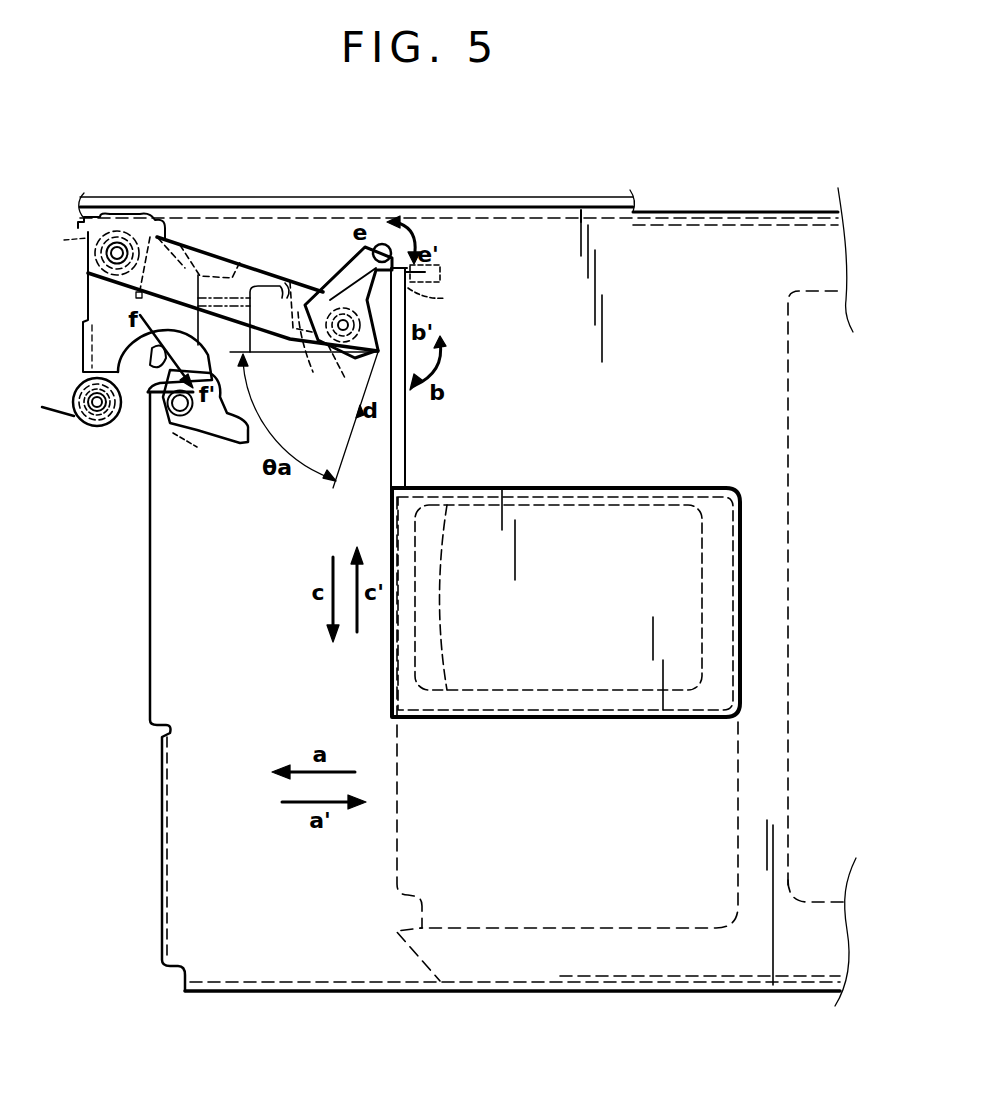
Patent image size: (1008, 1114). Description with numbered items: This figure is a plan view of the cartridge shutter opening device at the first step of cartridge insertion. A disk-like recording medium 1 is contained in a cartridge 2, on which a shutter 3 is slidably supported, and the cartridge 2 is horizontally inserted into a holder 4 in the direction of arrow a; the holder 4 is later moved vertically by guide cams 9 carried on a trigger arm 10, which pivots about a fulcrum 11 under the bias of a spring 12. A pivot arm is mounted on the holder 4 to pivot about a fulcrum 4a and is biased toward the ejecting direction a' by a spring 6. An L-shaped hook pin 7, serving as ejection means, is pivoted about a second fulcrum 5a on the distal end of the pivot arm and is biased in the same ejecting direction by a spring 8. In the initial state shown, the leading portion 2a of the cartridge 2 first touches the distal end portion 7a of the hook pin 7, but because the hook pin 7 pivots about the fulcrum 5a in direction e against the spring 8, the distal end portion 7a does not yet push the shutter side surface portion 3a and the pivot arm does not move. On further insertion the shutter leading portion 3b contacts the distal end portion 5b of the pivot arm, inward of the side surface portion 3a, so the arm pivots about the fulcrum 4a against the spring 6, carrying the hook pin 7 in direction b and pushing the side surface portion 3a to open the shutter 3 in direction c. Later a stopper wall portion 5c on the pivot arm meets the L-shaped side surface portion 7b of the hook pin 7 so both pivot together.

The disk-like recording medium 1 is at (480, 686).
The cartridge 2 is at (598, 905).
The leading portion of the cartridge 2a is at (425, 282).
The shutter 3 is at (633, 488).
The shutter side surface portion 3a is at (405, 275).
The shutter leading portion 3b is at (395, 453).
The holder 4 is at (208, 970).
The fulcrum 4a is at (117, 246).
The second fulcrum 5a is at (338, 314).
The distal end portion of the pivot arm 5b is at (388, 400).
The stopper wall portion 5c is at (300, 342).
The spring 6 is at (82, 246).
The L-shaped hook pin 7 is at (345, 262).
The distal end portion of the hook pin 7a is at (362, 246).
The L-shaped side surface portion 7b is at (312, 350).
The spring 8 is at (337, 345).
The guide cam 9 is at (183, 432).
The trigger arm 10 is at (128, 418).
The fulcrum 11 is at (96, 408).
The spring 12 is at (66, 417).